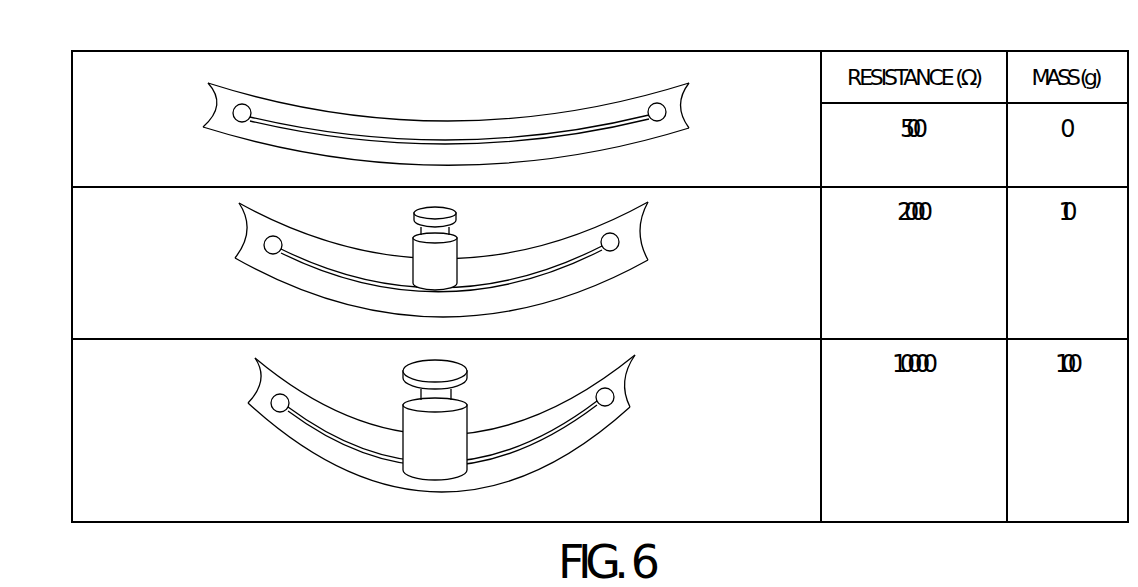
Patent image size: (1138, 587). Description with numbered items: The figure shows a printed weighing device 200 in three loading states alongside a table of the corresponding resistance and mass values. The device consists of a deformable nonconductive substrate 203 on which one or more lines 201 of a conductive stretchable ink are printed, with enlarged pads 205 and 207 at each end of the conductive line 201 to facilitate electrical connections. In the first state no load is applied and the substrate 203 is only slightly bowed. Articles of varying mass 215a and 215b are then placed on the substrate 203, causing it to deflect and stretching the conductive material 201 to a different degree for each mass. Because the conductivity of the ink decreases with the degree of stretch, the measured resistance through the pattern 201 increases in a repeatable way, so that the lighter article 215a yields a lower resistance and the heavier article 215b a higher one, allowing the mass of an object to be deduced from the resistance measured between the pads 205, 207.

The printed weighing device 200 is at (406, 274).
The lines of conductive stretchable ink 201 is at (387, 137).
The deformable nonconductive substrate 203 is at (312, 118).
The enlarged pad 205 is at (234, 108).
The enlarged pad 207 is at (666, 110).
The article of varying mass 215a is at (457, 222).
The article of varying mass 215b is at (466, 383).